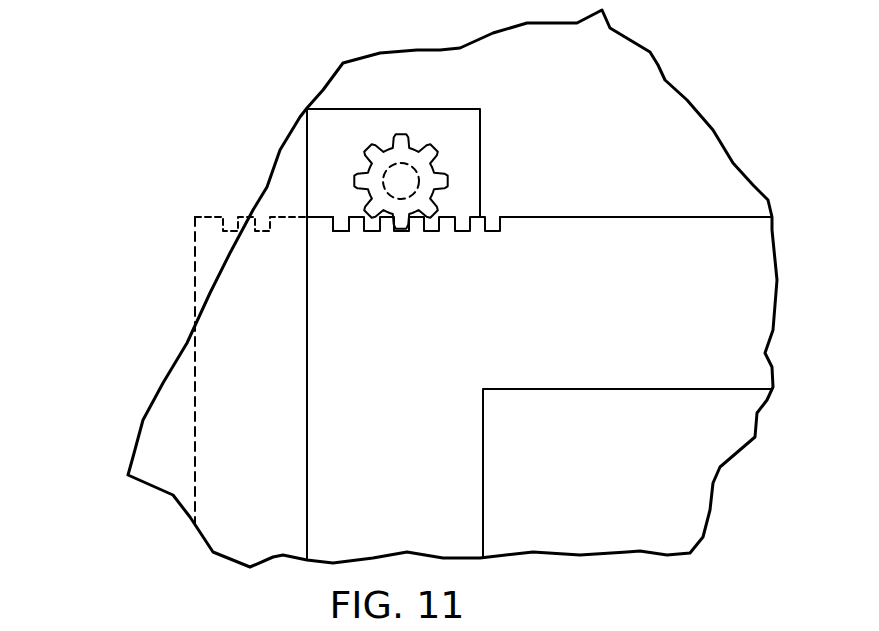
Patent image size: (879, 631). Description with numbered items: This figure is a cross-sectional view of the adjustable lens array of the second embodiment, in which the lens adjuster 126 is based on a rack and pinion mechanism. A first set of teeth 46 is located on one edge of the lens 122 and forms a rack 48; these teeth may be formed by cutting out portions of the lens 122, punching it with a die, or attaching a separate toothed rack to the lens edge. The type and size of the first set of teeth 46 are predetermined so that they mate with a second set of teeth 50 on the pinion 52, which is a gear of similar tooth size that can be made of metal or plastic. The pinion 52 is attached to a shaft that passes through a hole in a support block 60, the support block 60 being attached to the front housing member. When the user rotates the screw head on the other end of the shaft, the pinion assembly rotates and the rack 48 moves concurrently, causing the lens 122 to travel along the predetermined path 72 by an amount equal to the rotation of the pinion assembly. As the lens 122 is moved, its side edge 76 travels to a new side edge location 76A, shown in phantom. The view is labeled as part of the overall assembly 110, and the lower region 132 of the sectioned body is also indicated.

The assembly 110 is at (132, 67).
The support block 60 is at (390, 103).
The side edge 76 is at (307, 355).
The lens adjuster 126 is at (338, 140).
The second set of teeth 50 is at (357, 178).
The pinion 52 is at (447, 160).
The lens 122 is at (712, 209).
The first set of teeth 46 is at (195, 228).
The rack 48 is at (324, 237).
The new side edge location 76A is at (195, 295).
The predetermined path 72 is at (253, 443).
The lower block 132 is at (663, 446).